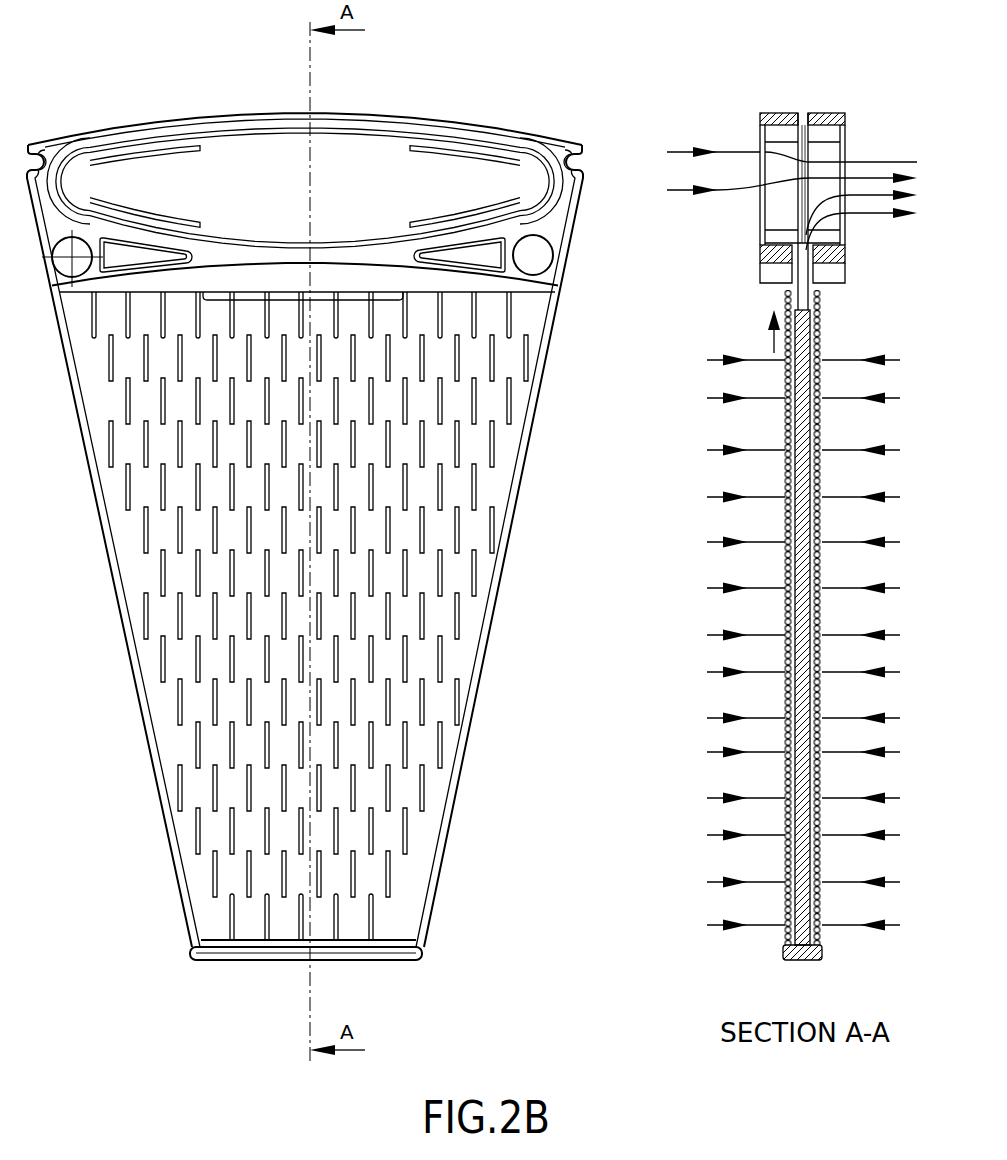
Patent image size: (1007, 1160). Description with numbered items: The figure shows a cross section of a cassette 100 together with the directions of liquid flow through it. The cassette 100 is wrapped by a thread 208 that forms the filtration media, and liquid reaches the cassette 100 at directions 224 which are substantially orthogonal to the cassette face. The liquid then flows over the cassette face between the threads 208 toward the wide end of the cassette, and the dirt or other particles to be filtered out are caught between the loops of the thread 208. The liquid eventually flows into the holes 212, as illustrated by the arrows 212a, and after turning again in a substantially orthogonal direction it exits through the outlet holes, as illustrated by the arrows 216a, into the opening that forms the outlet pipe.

The cassette 100 is at (489, 46).
The thread 208 is at (820, 316).
The holes 212 is at (358, 300).
The arrows 212a is at (770, 337).
The arrows 216a is at (748, 152).
The directions 224 is at (832, 450).